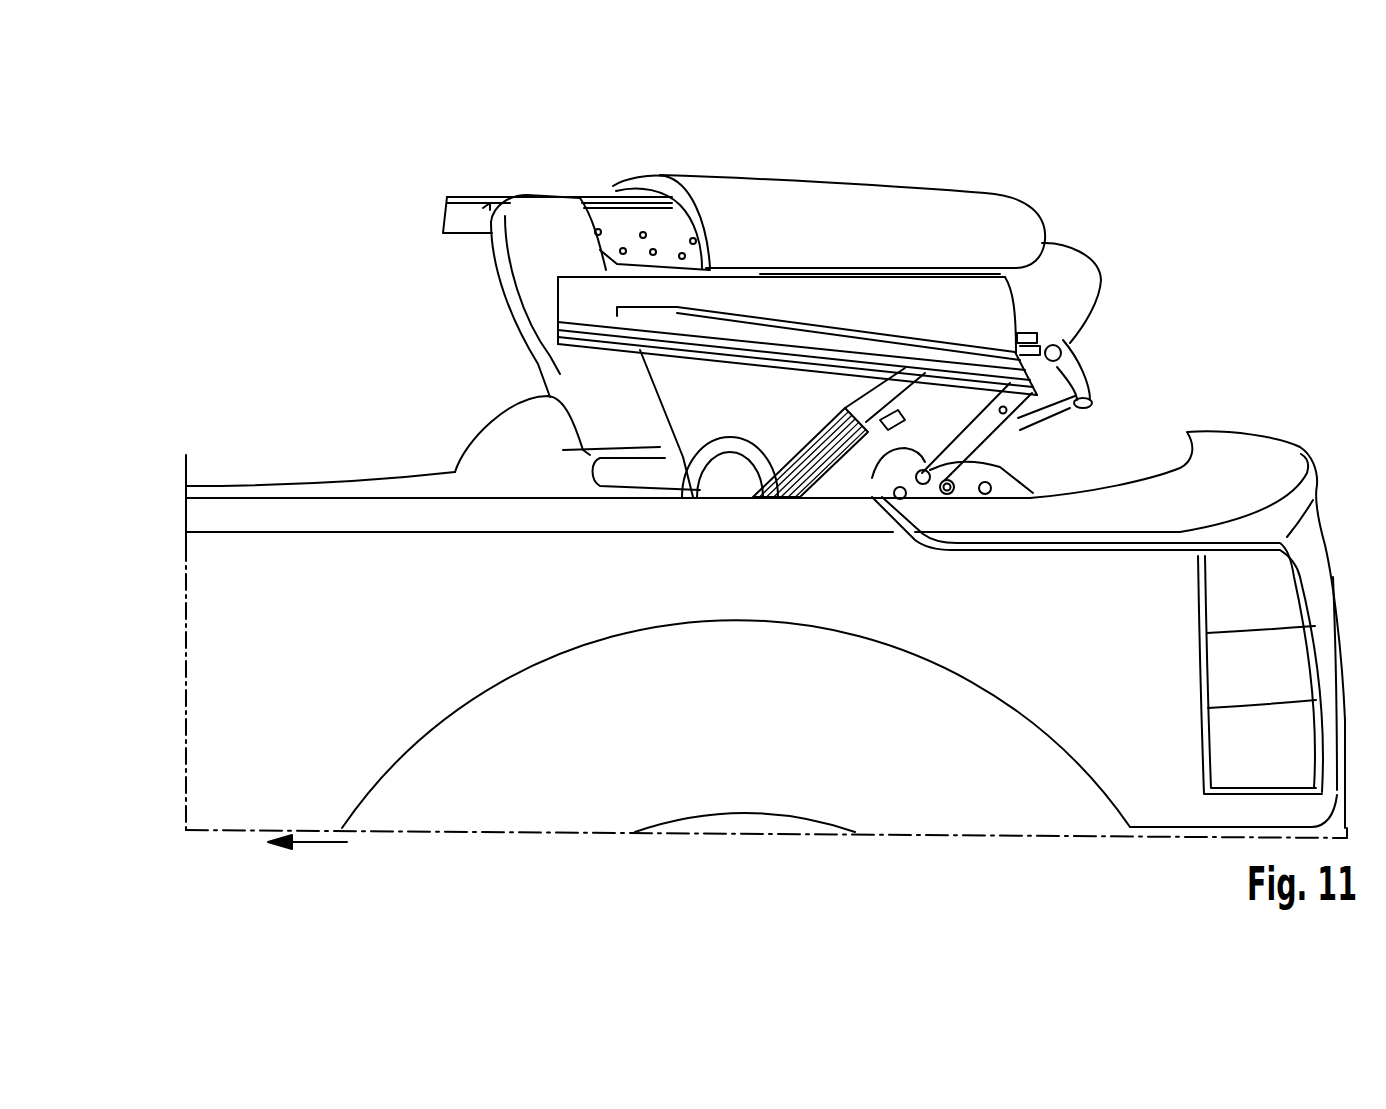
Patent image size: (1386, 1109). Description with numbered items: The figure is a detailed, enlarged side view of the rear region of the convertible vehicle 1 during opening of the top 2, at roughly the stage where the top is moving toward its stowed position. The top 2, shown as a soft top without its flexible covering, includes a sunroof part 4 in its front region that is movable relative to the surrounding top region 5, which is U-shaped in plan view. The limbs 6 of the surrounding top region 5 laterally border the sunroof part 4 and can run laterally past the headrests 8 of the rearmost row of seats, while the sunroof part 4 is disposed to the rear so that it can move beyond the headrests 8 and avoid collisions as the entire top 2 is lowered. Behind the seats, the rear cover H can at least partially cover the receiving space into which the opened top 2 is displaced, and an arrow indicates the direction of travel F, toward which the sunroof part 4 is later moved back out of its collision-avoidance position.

The convertible vehicle 1 is at (286, 186).
The top 2 is at (1122, 320).
The sunroof part 4 is at (838, 205).
The surrounding top region 5 is at (1012, 296).
The limbs 6 is at (471, 212).
The headrests 8 is at (560, 208).
The rear cover H is at (1244, 457).
The direction of travel F is at (324, 846).